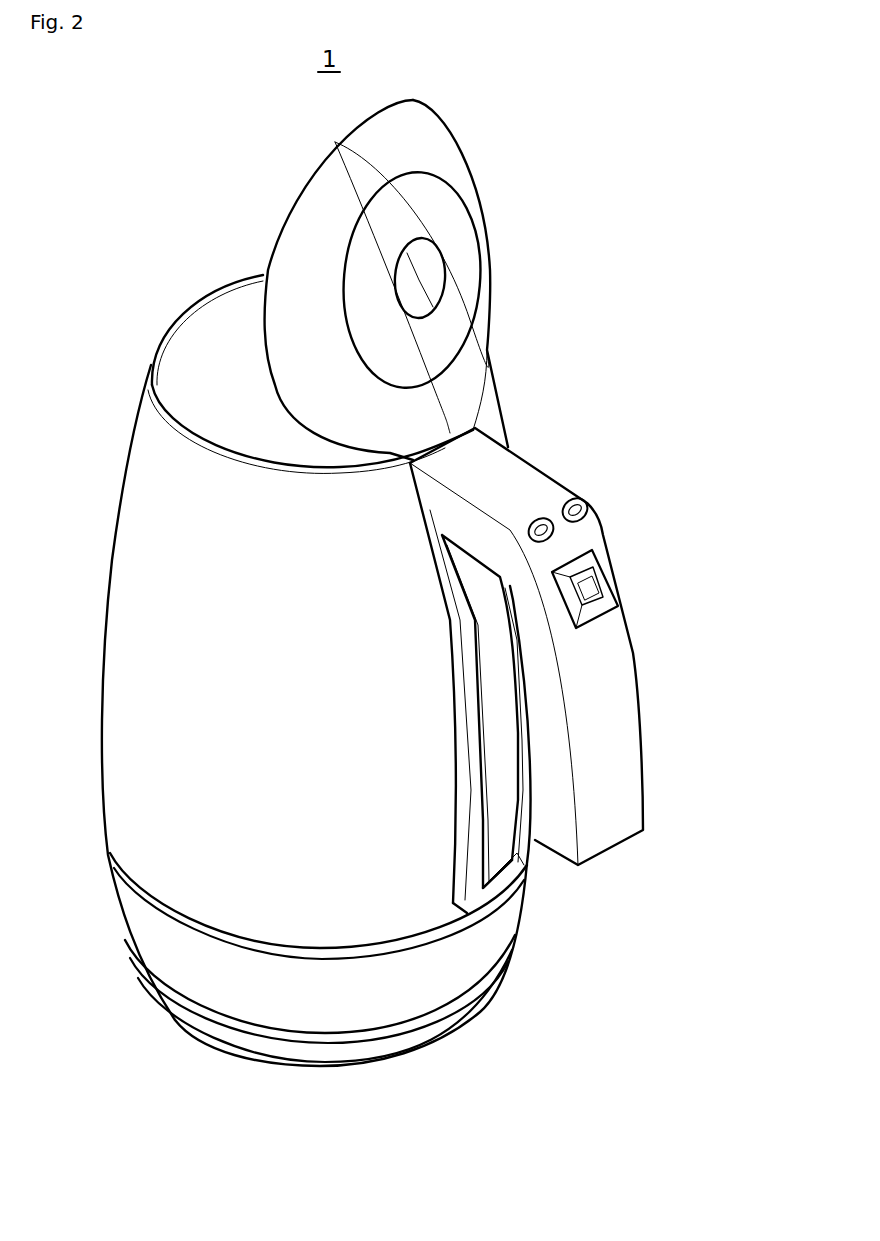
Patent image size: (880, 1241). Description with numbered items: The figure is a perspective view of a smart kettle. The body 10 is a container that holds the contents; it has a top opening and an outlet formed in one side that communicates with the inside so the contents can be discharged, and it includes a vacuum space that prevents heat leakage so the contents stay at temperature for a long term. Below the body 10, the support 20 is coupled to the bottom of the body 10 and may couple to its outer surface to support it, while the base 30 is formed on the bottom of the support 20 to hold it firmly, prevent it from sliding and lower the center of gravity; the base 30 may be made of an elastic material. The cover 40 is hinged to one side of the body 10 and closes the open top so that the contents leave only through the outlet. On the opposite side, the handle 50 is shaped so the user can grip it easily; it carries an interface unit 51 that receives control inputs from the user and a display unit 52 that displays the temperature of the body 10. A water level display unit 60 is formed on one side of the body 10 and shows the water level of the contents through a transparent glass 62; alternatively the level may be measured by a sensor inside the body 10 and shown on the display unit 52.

The body 10 is at (135, 594).
The support 20 is at (133, 921).
The base 30 is at (157, 997).
The cover 40 is at (478, 160).
The handle 50 is at (575, 665).
The interface unit 51 is at (588, 590).
The display unit 52 is at (587, 503).
The water level display unit 60 is at (490, 887).
The transparent glass 62 is at (500, 835).